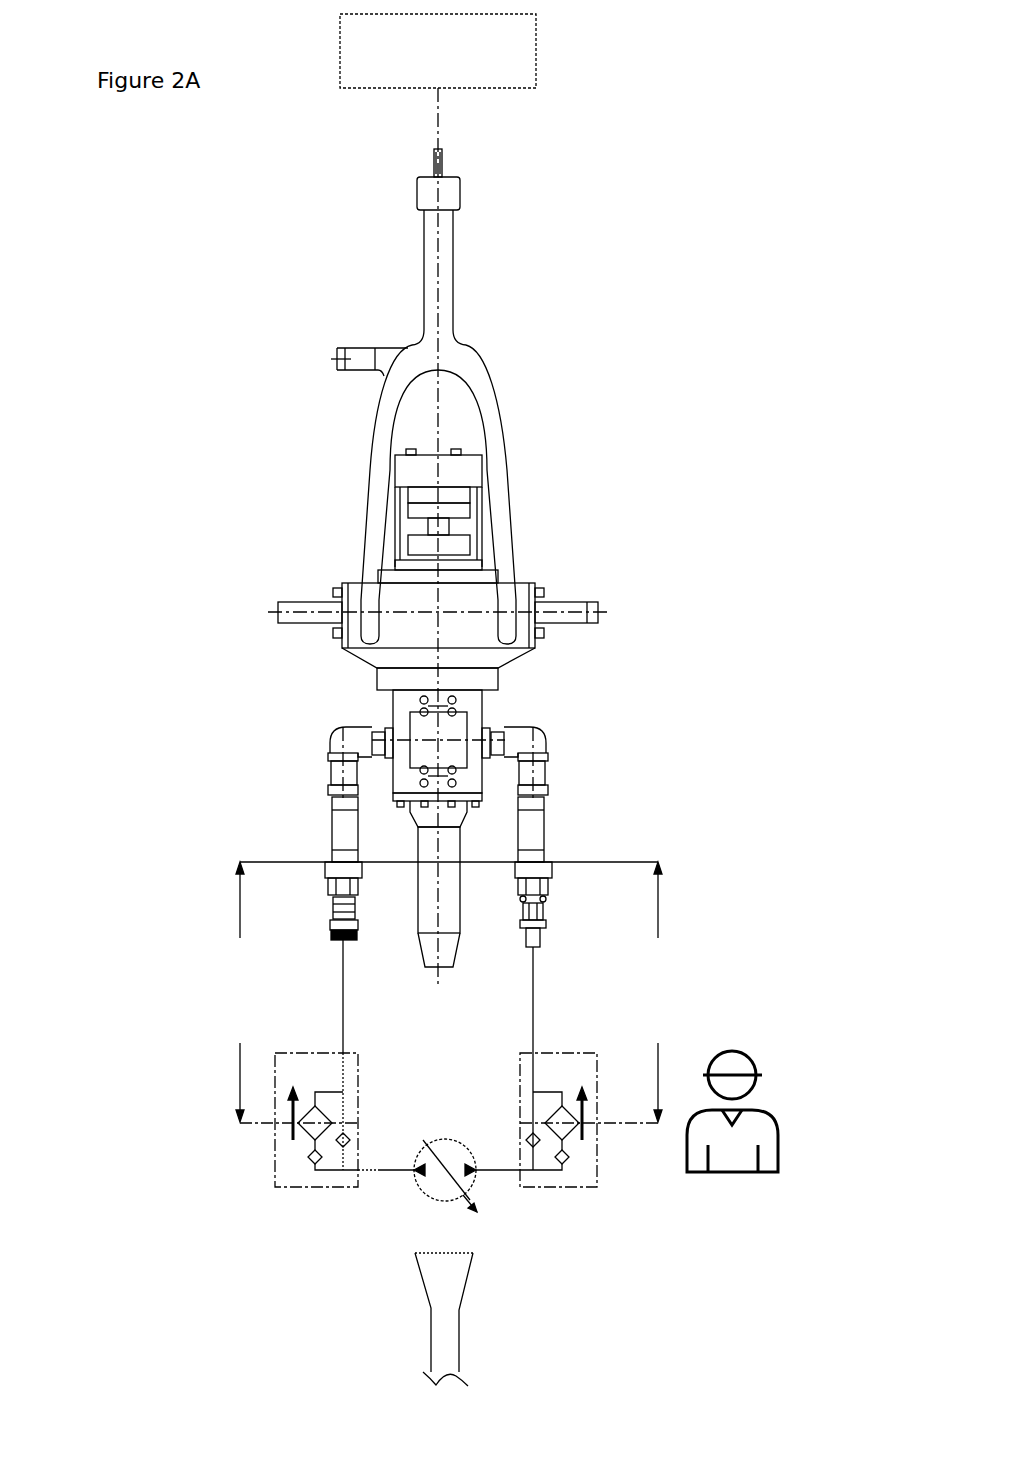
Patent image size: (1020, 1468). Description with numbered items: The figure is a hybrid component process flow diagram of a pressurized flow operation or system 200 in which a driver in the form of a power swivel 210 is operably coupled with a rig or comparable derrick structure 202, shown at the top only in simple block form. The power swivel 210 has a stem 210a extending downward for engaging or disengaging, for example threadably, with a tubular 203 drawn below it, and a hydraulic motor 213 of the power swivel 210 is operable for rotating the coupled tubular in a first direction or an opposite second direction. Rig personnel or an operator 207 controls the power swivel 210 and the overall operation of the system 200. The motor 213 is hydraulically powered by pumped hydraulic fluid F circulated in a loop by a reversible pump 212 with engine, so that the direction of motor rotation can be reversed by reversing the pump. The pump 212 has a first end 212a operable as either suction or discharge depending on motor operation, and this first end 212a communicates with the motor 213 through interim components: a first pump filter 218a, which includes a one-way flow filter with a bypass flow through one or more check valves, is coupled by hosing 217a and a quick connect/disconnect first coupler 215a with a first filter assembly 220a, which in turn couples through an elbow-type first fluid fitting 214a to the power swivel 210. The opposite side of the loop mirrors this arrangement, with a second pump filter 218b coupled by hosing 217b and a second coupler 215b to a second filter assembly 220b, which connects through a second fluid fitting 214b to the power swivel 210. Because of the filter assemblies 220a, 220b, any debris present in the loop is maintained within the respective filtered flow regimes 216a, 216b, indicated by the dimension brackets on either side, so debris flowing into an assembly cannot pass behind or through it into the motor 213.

The pressurized flow operation or system 200 is at (180, 1163).
The rig or derrick structure 202 is at (340, 62).
The tubular 203 is at (459, 1340).
The operator 207 is at (732, 1052).
The power swivel 210 is at (372, 452).
The stem 210a is at (431, 905).
The pump 212 is at (417, 1185).
The first end of the pump 212a is at (376, 1173).
The motor 213 is at (468, 704).
The first fluid fitting 214a is at (340, 742).
The second fluid fitting 214b is at (540, 738).
The first coupler 215a is at (336, 912).
The second coupler 215b is at (546, 917).
The first filtered flow regime 216a is at (324, 992).
The second filtered flow regime 216b is at (567, 992).
The hosing 217a is at (343, 1030).
The hosing 217b is at (532, 996).
The first pump filter 218a is at (273, 1180).
The second pump filter 218b is at (597, 1168).
The first filter assembly 220a is at (333, 830).
The second filter assembly 220b is at (540, 830).